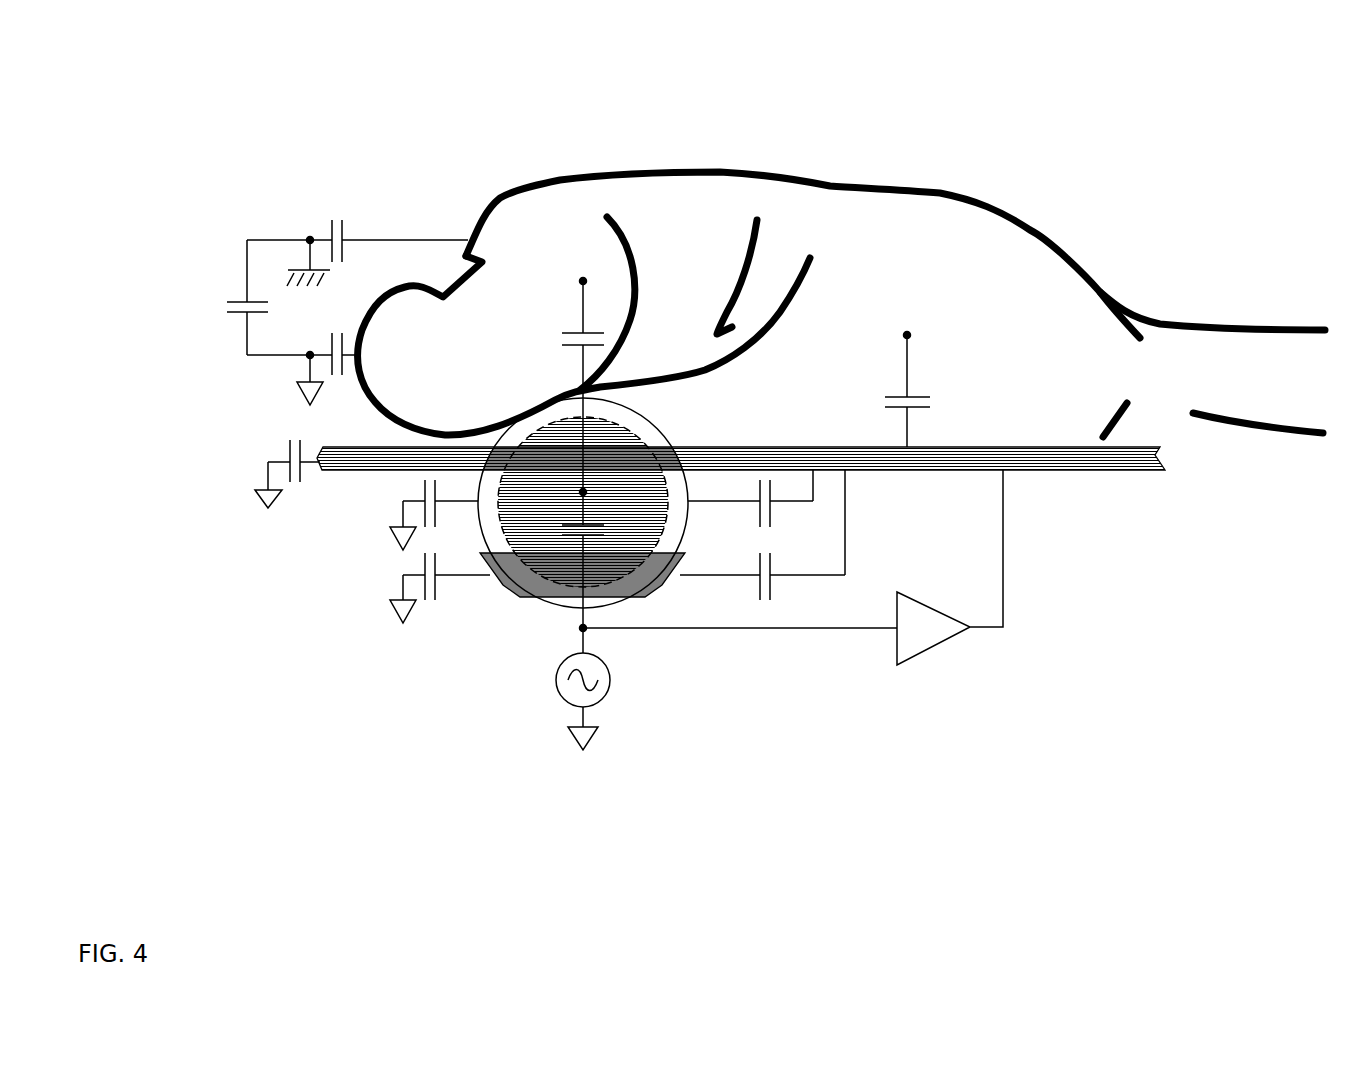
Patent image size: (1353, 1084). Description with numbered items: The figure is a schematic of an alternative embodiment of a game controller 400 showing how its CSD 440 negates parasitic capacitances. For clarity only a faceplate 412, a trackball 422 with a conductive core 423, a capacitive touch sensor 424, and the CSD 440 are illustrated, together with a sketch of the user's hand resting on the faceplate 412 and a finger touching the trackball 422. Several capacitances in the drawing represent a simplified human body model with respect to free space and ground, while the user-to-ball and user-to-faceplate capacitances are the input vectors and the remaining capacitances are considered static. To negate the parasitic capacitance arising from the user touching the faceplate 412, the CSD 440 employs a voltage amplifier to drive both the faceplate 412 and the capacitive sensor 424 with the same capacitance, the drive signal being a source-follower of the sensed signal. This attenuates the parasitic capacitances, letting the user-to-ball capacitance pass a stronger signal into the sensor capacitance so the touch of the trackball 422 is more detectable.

The game controller 400 is at (226, 100).
The faceplate 412 is at (1018, 447).
The trackball 422 is at (514, 437).
The conductive core 423 is at (634, 438).
The capacitive touch sensor 424 is at (498, 575).
The CSD 440 is at (356, 530).